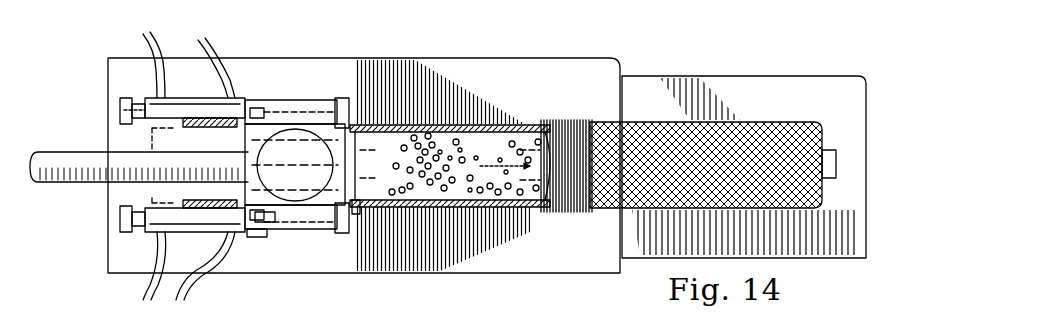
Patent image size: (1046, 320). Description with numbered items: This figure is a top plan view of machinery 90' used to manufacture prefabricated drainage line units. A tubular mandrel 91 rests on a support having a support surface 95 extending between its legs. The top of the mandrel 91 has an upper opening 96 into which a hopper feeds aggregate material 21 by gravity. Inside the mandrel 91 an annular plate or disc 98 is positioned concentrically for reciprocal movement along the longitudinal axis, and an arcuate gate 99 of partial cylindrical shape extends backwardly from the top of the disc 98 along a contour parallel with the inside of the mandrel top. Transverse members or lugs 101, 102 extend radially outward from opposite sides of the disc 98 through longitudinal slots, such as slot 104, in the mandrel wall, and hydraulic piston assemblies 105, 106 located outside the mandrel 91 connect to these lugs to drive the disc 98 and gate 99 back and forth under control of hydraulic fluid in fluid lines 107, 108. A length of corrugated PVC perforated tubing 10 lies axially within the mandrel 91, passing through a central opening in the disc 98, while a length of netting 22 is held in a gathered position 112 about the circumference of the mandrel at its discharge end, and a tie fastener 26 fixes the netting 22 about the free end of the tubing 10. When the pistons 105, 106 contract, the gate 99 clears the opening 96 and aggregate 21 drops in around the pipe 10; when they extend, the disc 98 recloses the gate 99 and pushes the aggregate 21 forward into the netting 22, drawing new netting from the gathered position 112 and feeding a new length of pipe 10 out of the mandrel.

The corrugated PVC perforated tubing 10 is at (68, 144).
The aggregate material 21 is at (426, 124).
The netting 22 is at (796, 118).
The tie fastener 26 is at (828, 148).
The machinery 90' is at (744, 144).
The tubular mandrel 91 is at (430, 212).
The support surface 95 is at (553, 253).
The upper opening 96 is at (360, 148).
The annular plate or disc 98 is at (366, 178).
The arcuate gate 99 is at (158, 194).
The transverse member or lug 101 is at (278, 226).
The transverse member or lug 102 is at (282, 98).
The longitudinal slot 104 is at (182, 128).
The hydraulic piston assembly 105 is at (242, 234).
The hydraulic piston assembly 106 is at (202, 92).
The fluid line 107 is at (208, 258).
The fluid line 108 is at (187, 46).
The gathered position 112 is at (574, 118).